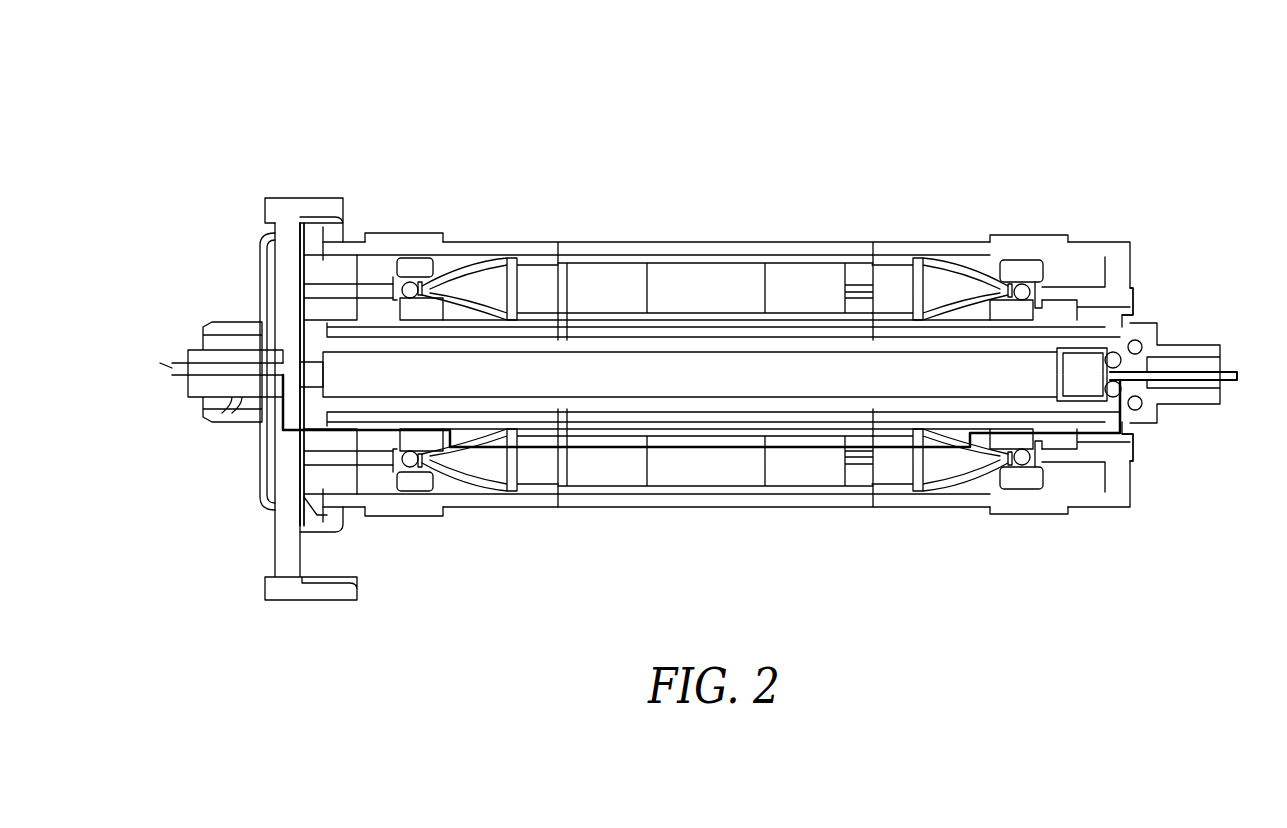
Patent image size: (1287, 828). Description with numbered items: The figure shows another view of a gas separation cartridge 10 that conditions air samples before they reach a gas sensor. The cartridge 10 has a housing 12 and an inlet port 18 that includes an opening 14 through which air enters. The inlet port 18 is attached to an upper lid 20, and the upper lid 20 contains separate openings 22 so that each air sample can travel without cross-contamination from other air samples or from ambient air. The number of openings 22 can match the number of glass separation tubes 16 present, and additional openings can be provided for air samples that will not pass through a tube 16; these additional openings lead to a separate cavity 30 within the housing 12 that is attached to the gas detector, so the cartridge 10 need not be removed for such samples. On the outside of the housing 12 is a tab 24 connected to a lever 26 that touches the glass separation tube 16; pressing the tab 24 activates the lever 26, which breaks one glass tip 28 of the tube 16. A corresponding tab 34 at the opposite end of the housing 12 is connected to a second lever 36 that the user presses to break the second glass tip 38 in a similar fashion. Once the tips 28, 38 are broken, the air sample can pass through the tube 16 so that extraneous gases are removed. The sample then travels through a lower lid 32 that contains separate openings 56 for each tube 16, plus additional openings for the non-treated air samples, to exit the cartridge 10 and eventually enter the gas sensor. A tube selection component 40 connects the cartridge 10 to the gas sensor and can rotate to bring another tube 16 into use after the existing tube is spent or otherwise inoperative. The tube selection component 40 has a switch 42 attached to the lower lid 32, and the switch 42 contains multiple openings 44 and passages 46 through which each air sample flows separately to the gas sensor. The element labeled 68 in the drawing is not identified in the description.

The gas separation cartridge 10 is at (702, 318).
The housing 12 is at (470, 243).
The opening 14 is at (1238, 376).
The glass separation tube 16 is at (690, 292).
The inlet port 18 is at (1203, 343).
The upper lid 20 is at (1131, 256).
The openings 22 is at (1133, 301).
The tab 24 is at (1038, 236).
The lever 26 is at (1097, 258).
The glass tip 28 is at (1012, 258).
The separate cavity 30 is at (620, 350).
The lower lid 32 is at (316, 272).
The tab 34 is at (402, 233).
The second lever 36 is at (420, 268).
The second glass tip 38 is at (406, 285).
The tube selection component 40 is at (232, 428).
The switch 42 is at (275, 553).
The openings 44 is at (267, 507).
The passages 46 is at (304, 531).
The openings 56 is at (266, 213).
The cable conduit 68 is at (172, 368).